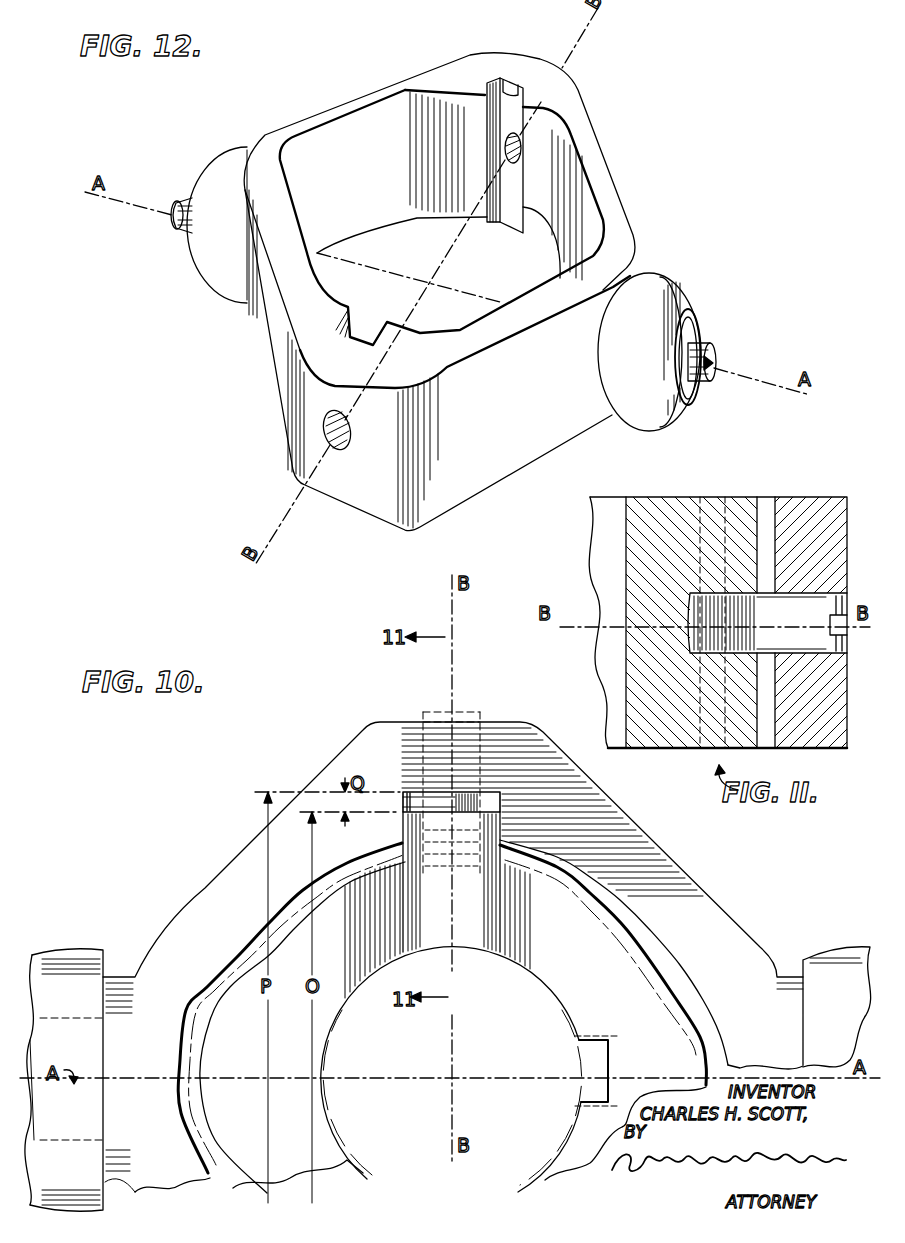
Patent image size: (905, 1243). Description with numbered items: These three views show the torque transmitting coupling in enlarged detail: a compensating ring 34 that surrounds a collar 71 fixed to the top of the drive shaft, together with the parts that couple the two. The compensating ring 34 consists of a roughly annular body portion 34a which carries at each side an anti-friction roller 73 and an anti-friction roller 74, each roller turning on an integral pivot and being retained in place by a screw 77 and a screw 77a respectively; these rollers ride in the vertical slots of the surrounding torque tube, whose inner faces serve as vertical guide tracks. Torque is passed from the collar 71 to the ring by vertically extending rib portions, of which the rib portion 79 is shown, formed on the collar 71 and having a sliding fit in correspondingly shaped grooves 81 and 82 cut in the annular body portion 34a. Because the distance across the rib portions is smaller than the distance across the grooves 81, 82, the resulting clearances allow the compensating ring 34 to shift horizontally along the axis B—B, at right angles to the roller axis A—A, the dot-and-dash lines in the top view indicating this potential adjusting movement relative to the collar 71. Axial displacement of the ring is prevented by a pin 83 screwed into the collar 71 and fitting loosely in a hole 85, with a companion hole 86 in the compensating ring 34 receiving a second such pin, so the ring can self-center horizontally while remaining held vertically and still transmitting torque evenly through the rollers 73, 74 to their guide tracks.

In FIG. 12, the compensating ring 34 is at (629, 182).
In FIG. 11, the compensating ring 34 is at (803, 502).
In FIG. 10, the compensating ring 34 is at (243, 861).
In FIG. 12, the annular body portion 34a is at (339, 166).
In FIG. 11, the collar 71 is at (679, 500).
In FIG. 10, the collar 71 is at (420, 1017).
In FIG. 12, the anti-friction roller 73 is at (649, 352).
In FIG. 10, the anti-friction roller 73 is at (827, 953).
In FIG. 12, the anti-friction roller 74 is at (217, 225).
In FIG. 10, the anti-friction roller 74 is at (45, 964).
In FIG. 12, the screw 77 is at (700, 345).
In FIG. 12, the screw 77a is at (172, 222).
In FIG. 10, the rib portion 79 is at (417, 850).
In FIG. 12, the groove 81 is at (500, 80).
In FIG. 11, the groove 81 is at (766, 503).
In FIG. 10, the groove 81 is at (403, 800).
In FIG. 12, the groove 82 is at (372, 342).
In FIG. 11, the pin 83 is at (791, 623).
In FIG. 10, the pin 83 is at (403, 804).
In FIG. 12, the hole 85 is at (533, 95).
In FIG. 12, the hole 86 is at (341, 450).